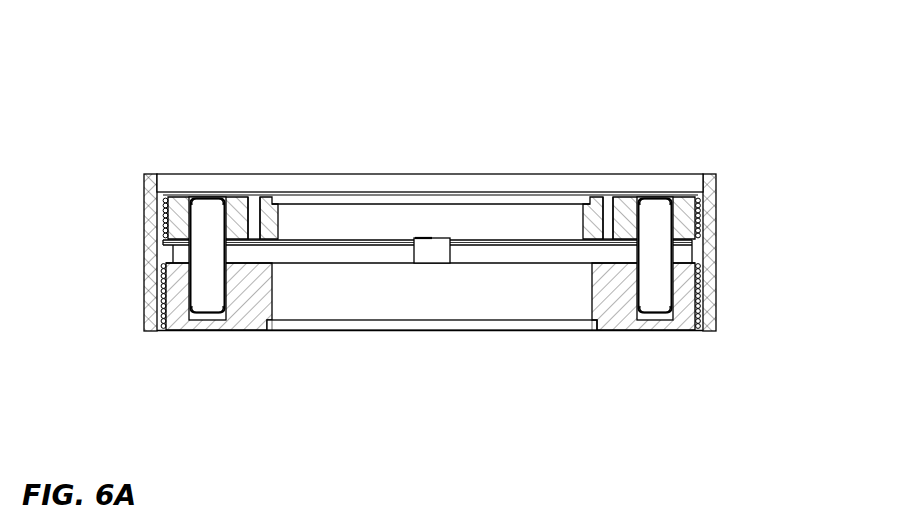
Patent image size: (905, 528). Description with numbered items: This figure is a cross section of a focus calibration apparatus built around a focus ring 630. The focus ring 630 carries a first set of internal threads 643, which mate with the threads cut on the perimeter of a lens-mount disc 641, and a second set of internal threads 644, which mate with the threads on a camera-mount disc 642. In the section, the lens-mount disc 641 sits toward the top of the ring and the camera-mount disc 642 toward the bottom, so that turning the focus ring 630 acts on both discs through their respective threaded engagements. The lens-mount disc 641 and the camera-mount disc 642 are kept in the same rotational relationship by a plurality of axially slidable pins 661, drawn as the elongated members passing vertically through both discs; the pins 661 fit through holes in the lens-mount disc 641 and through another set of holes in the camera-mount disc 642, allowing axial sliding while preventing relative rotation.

The focus ring 630 is at (708, 297).
The lens-mount disc 641 is at (613, 217).
The camera-mount disc 642 is at (615, 320).
The first set of internal threads 643 is at (700, 226).
The second set of internal threads 644 is at (700, 320).
The axially slidable pins 661 is at (654, 217).